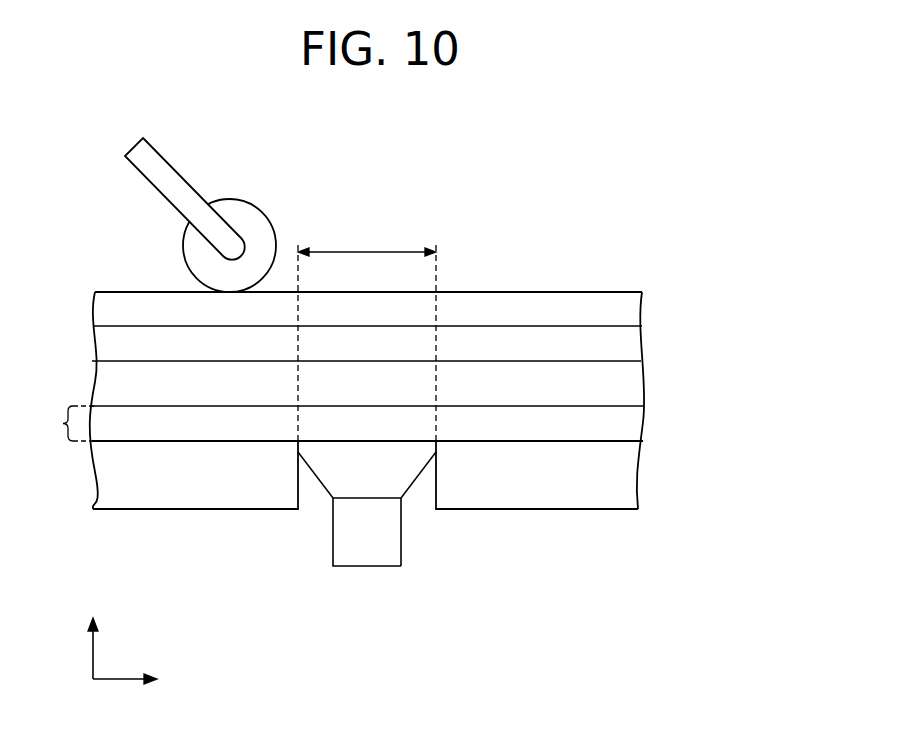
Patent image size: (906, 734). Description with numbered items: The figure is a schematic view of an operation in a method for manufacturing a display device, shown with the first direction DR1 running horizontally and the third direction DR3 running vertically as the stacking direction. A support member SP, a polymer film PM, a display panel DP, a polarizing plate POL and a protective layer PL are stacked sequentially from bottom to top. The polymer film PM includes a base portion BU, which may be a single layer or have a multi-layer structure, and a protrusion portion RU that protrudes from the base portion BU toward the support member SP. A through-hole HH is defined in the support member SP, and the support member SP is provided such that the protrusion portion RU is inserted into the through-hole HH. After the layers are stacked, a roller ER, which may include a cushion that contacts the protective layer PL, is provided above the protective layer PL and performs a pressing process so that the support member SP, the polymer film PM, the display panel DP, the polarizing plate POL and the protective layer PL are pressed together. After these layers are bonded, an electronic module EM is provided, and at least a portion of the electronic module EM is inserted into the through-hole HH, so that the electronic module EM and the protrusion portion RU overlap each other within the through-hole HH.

The roller ER is at (252, 183).
The through-hole HH is at (367, 332).
The protective layer PL is at (632, 309).
The polarizing plate POL is at (630, 342).
The display panel DP is at (630, 378).
The base portion BU is at (630, 414).
The support member SP is at (630, 469).
The polymer film PM is at (65, 423).
The protrusion portion RU is at (352, 488).
The electronic module EM is at (397, 558).
The first direction DR1 is at (144, 681).
The third direction DR3 is at (93, 637).